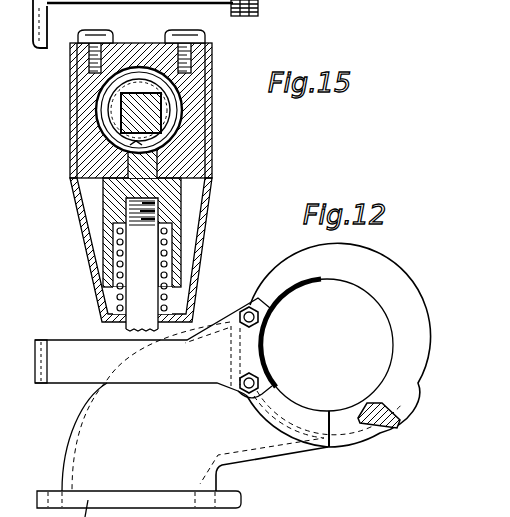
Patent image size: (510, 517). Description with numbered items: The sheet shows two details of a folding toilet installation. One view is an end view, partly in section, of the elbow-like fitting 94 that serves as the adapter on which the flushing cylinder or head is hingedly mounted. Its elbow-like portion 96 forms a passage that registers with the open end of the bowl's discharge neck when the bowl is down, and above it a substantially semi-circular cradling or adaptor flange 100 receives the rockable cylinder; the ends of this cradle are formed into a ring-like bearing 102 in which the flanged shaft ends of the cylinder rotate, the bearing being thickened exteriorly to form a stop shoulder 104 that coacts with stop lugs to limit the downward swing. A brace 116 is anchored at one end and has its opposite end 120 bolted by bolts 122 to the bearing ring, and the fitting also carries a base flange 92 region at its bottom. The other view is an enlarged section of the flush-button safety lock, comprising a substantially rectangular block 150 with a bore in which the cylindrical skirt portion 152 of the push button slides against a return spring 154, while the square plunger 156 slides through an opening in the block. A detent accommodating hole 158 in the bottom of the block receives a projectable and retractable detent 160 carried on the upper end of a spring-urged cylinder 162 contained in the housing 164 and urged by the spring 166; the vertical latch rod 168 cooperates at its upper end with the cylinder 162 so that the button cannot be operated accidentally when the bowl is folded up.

In FIG. 12, the elbow-like fitting 94 is at (397, 271).
In FIG. 12, the elbow-like portion 96 is at (93, 428).
In FIG. 12, the base flange 92 is at (5, 443).
In FIG. 12, the cradling or adaptor flange 100 is at (381, 427).
In FIG. 12, the ring-like bearing 102 is at (294, 275).
In FIG. 12, the stop shoulder 104 is at (339, 413).
In FIG. 12, the brace 116 is at (158, 377).
In FIG. 12, the brace end 120 is at (262, 357).
In FIG. 15, the bolt 122 is at (257, 13).
In FIG. 12, the bolt 122 is at (243, 309).
In FIG. 15, the rectangular block 150 is at (87, 124).
In FIG. 15, the cylindrical skirt portion 152 is at (108, 93).
In FIG. 15, the return spring 154 is at (134, 89).
In FIG. 15, the square plunger 156 is at (150, 115).
In FIG. 15, the detent accommodating hole 158 is at (158, 158).
In FIG. 15, the detent 160 is at (133, 145).
In FIG. 15, the spring-urged cylinder 162 is at (108, 203).
In FIG. 15, the housing 164 is at (210, 201).
In FIG. 15, the spring 166 is at (118, 273).
In FIG. 15, the vertical latch rod 168 is at (137, 298).